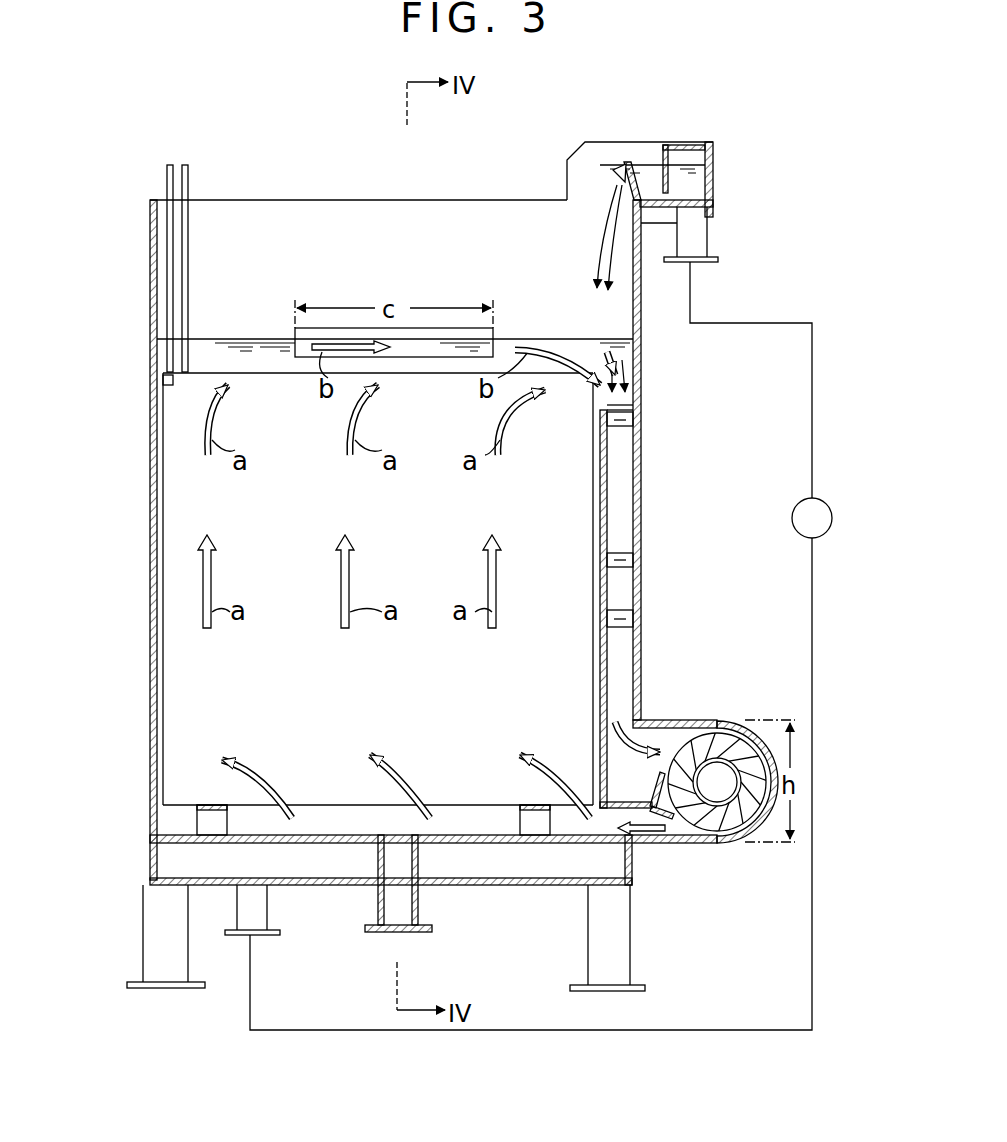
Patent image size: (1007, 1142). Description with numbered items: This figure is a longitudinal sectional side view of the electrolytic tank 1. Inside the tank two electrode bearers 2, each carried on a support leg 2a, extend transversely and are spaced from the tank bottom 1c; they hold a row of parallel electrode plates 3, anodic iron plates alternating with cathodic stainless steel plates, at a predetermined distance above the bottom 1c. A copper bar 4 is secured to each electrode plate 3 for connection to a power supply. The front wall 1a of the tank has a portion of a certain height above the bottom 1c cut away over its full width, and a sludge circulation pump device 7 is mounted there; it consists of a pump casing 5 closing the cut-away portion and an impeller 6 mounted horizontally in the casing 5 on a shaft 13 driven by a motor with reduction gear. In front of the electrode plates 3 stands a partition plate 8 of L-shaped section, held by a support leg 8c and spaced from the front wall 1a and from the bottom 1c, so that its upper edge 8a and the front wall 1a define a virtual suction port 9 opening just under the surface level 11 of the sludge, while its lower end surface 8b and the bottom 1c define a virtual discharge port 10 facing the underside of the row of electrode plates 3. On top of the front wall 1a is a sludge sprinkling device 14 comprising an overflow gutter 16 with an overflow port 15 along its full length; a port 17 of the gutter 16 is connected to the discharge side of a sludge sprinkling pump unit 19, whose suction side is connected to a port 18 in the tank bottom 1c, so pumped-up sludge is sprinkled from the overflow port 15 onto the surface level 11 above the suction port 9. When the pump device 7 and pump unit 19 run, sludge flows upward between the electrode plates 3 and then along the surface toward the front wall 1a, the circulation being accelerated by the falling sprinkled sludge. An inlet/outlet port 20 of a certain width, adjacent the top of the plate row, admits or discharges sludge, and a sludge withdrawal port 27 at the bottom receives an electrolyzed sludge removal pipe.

The electrolytic tank 1 is at (234, 152).
The front wall 1a is at (641, 520).
The tank bottom 1c is at (341, 833).
The electrode bearer 2 is at (213, 805).
The support leg 2a is at (210, 818).
The electrode plate 3 is at (160, 512).
The copper bar 4 is at (168, 168).
The pump casing 5 is at (733, 841).
The impeller 6 is at (690, 746).
The sludge circulation pump device 7 is at (755, 690).
The partition plate 8 is at (608, 468).
The upper edge of partition plate 8a is at (604, 400).
The lower end surface of partition plate 8b is at (648, 812).
The support leg for partition plate 8c is at (606, 452).
The suction port 9 is at (628, 398).
The discharge port 10 is at (612, 823).
The surface level of sludge 11 is at (262, 336).
The shaft 13 is at (700, 830).
The sludge sprinkling device 14 is at (732, 108).
The overflow port 15 is at (622, 166).
The overflow gutter 16 is at (705, 165).
The port of overflow gutter 17 is at (708, 240).
The port in tank bottom 18 is at (255, 912).
The sludge sprinkling pump unit 19 is at (792, 516).
The inlet/outlet port 20 is at (498, 332).
The sludge withdrawal port 27 is at (405, 908).